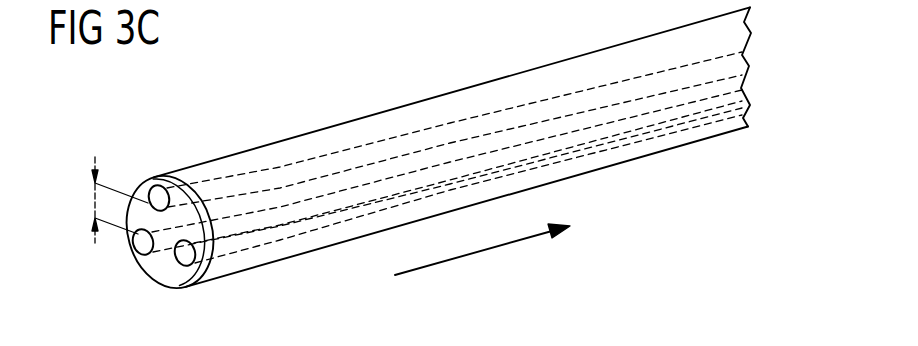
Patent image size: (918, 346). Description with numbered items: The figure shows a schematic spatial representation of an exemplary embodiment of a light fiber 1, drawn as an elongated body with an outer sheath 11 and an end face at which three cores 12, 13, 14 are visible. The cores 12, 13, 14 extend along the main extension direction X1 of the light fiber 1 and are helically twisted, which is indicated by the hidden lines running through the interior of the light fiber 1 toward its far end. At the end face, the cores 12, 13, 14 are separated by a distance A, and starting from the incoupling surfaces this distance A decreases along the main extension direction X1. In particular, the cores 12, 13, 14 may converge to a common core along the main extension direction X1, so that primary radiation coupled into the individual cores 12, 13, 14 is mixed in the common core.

The light fiber 1 is at (289, 117).
The cable sheath 11 is at (548, 70).
The core 12 is at (220, 178).
The core 13 is at (223, 237).
The core 14 is at (303, 223).
The distance A is at (95, 204).
The main extension direction X1 is at (480, 252).